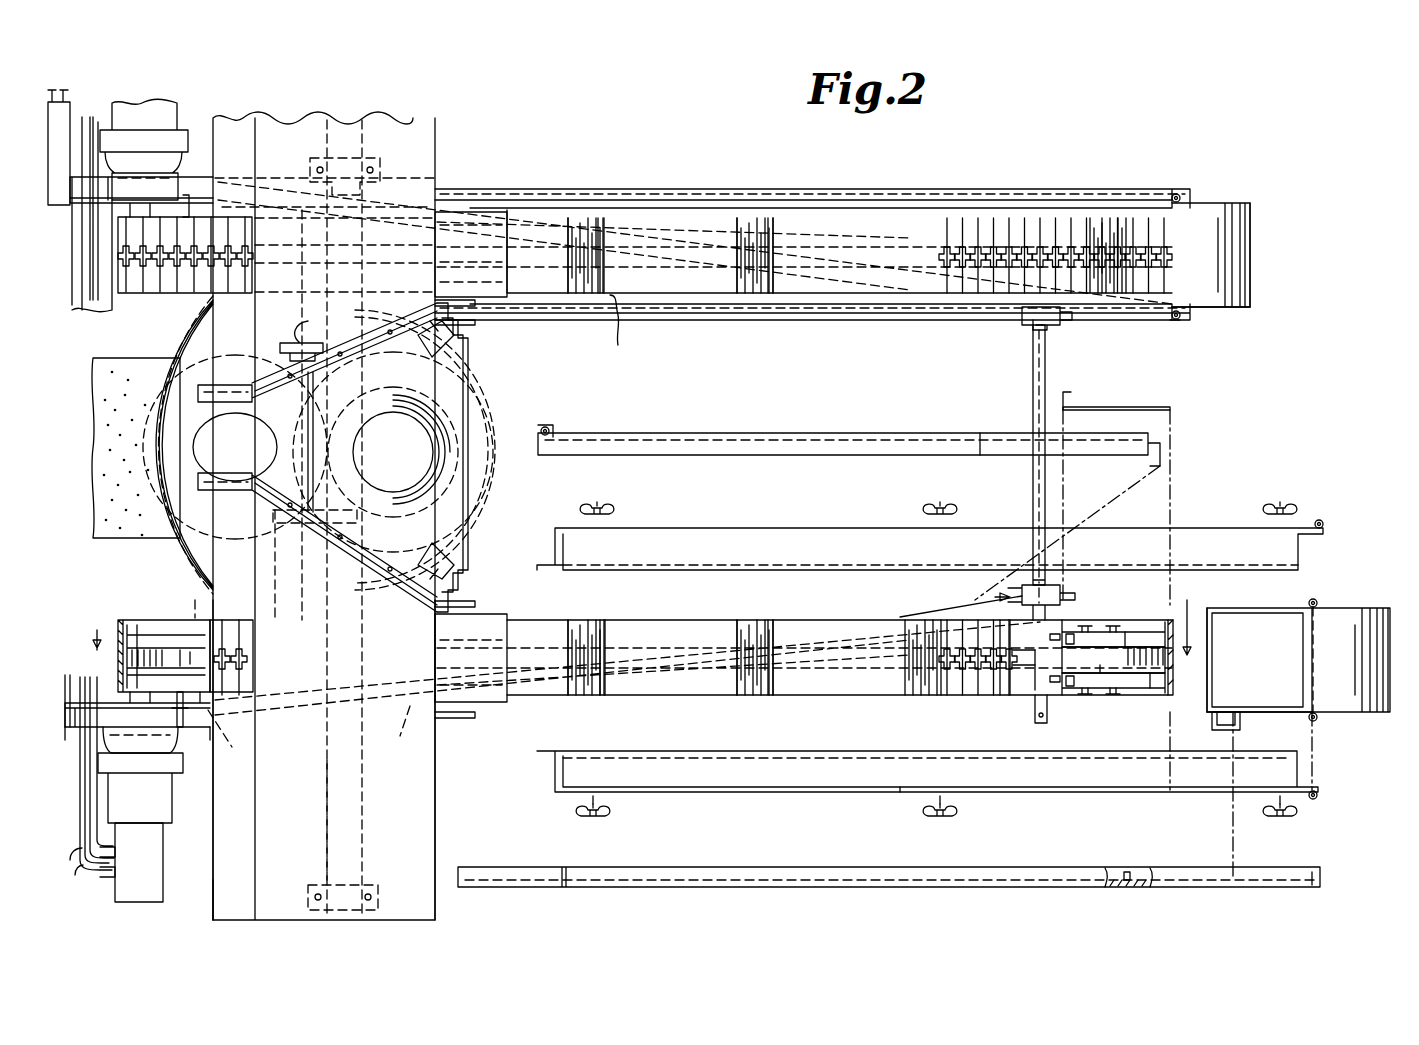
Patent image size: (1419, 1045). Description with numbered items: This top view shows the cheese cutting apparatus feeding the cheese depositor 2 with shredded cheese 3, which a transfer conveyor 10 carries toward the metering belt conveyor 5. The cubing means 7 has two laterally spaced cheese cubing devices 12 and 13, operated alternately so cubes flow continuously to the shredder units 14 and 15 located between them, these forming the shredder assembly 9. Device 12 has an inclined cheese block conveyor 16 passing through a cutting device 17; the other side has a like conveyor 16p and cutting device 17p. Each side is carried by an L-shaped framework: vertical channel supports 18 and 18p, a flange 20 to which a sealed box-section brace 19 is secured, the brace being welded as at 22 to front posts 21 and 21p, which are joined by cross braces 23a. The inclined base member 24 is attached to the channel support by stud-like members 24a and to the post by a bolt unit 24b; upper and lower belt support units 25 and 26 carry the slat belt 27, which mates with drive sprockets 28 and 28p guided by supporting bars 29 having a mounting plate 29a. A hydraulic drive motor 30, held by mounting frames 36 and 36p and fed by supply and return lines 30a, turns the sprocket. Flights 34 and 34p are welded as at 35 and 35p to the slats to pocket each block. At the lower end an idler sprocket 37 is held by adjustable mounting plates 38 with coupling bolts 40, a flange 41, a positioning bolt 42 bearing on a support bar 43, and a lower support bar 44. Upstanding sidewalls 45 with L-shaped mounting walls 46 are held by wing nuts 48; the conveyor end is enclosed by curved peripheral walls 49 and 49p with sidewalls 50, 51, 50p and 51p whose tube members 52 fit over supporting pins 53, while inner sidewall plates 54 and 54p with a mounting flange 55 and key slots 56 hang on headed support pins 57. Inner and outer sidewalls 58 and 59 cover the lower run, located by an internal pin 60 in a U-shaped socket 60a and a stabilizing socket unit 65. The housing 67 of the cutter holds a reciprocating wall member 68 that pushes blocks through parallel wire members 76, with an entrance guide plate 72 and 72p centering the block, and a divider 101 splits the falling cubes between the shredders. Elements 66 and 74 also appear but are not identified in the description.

The cheese applicator or depositor 2 is at (138, 365).
The shredded cheese 3 is at (100, 454).
The shredded cheese metering belt conveyor 5 is at (1188, 660).
The cubing means 7 is at (84, 867).
The shredder assembly 9 is at (493, 405).
The transfer conveyor 10 is at (130, 537).
The cheese cubing device 12 is at (1362, 592).
The cheese cubing device 13 is at (1226, 180).
The shredder unit 14 is at (482, 482).
The shredder unit 15 is at (162, 365).
The inclined cheese block conveyor 16 is at (814, 698).
The inclined cheese block conveyor 16p is at (833, 235).
The cutting apparatus 17 is at (435, 782).
The cutting apparatus 17p is at (439, 162).
The main vertical channel support 18 is at (176, 740).
The main vertical channel support 18p is at (116, 208).
The angled brace 19 is at (900, 607).
The flange 20 is at (206, 728).
The front vertical post support 21 is at (1062, 592).
The front vertical post support 21p is at (1048, 326).
The weld 22 is at (1020, 567).
The cross braces 23a is at (1052, 367).
The inclined base member 24 is at (1020, 697).
The stud-like members 24a is at (170, 727).
The bolt unit 24b is at (1048, 569).
The upper belt support unit 25 is at (162, 622).
The lower belt support unit 26 is at (1132, 630).
The slat belt 27 is at (978, 700).
The drive sprocket 28 is at (110, 654).
The drive sprocket 28p is at (185, 255).
The supporting bars 29 is at (155, 699).
The mounting plate 29a is at (205, 590).
The hydraulic drive motor 30 is at (154, 818).
The supply and return lines 30a is at (55, 92).
The conveyor flights 34 is at (919, 725).
The conveyor flights 34p is at (634, 325).
The weld 35 is at (867, 688).
The weld 35p is at (736, 236).
The mounting frame 36 is at (147, 777).
The mounting frame 36p is at (144, 149).
The idler sprocket 37 is at (1160, 670).
The adjustable mounting plates 38 is at (1125, 712).
The coupling bolts 40 is at (1086, 702).
The flange 41 is at (1068, 700).
The adjustable positioning bolt 42 is at (1054, 715).
The support bar 43 is at (1025, 712).
The lower support bar 44 is at (1144, 692).
The sidewalls 45 is at (882, 790).
The L-shaped mounting wall 46 is at (762, 776).
The wing nuts 48 is at (1293, 834).
The curved peripheral wall 49 is at (1308, 641).
The curved peripheral wall 49p is at (1230, 266).
The sidewall 50 is at (1262, 738).
The sidewall 50p is at (1224, 310).
The sidewall 51 is at (1292, 606).
The sidewall 51p is at (1238, 202).
The supporting tube members 52 is at (1338, 734).
The supporting pins 53 is at (1318, 789).
The inner sidewall plate 54 is at (1164, 406).
The inner sidewall plate 54p is at (1160, 322).
The mounting flange 55 is at (1033, 379).
The key slots 56 is at (1072, 396).
The headed support pins 57 is at (1110, 620).
The inner sidewall 58 is at (993, 432).
The outer sidewall 59 is at (1012, 892).
The internal pin 60 is at (1130, 868).
The U-shaped socket 60a is at (1220, 732).
The stabilizing socket unit 65 is at (995, 598).
The rail end 66 is at (554, 430).
The housing 67 is at (424, 820).
The reciprocating wall member 68 is at (409, 729).
The upper entrance guide plate 72 is at (500, 622).
The upper entrance guide plate 72p is at (471, 254).
The hidden plate 74 is at (324, 794).
The wire members 76 is at (406, 554).
The divider 101 is at (318, 455).